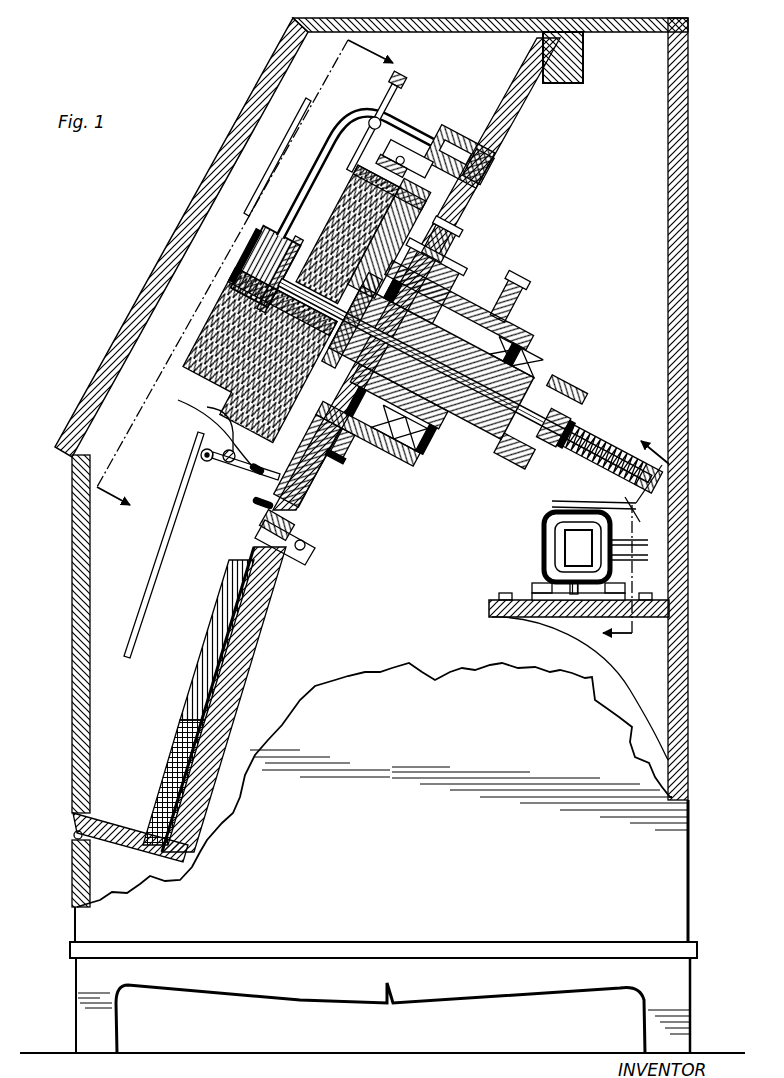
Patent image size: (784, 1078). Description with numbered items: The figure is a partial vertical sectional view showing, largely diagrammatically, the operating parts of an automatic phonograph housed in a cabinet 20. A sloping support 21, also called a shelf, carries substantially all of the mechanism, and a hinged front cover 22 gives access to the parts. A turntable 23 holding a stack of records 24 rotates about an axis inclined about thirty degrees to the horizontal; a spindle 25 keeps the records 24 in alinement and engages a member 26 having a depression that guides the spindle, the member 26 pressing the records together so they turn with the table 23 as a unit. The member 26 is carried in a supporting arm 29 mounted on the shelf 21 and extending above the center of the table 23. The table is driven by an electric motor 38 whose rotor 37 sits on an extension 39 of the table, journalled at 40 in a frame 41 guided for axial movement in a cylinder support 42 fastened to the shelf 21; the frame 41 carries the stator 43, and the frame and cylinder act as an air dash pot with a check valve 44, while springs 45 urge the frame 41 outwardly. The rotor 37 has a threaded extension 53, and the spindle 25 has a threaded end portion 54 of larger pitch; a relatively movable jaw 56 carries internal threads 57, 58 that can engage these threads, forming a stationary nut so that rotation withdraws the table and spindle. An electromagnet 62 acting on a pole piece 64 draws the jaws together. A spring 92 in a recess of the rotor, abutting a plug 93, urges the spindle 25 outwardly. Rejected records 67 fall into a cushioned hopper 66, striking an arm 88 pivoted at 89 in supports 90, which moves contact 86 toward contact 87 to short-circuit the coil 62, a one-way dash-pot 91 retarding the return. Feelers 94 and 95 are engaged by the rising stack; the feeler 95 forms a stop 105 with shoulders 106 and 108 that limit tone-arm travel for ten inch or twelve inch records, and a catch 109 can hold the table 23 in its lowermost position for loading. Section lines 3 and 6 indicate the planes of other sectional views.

The cabinet 20 is at (672, 480).
The sloping support 21 is at (522, 103).
The hinged front cover 22 is at (165, 276).
The turntable 23 is at (455, 220).
The stack of records 24 is at (253, 357).
The spindle 25 is at (562, 356).
The member 26 is at (275, 300).
The supporting arm 29 is at (304, 143).
The rotor 37 is at (355, 430).
The electric motor 38 is at (455, 270).
The extension of the table 39 is at (437, 255).
The journal 40 is at (320, 440).
The frame 41 is at (425, 455).
The cylinder support 42 is at (393, 455).
The stator 43 is at (513, 313).
The check valve 44 is at (510, 290).
The springs 45 is at (513, 335).
The threaded extension 53 is at (560, 390).
The threaded end portion 54 is at (648, 500).
The jaw 56 is at (585, 420).
The internal threads 57 is at (600, 425).
The internal threads 58 is at (600, 485).
The electromagnet 62 is at (545, 532).
The pole piece 64 is at (540, 555).
The cushioned hopper 66 is at (138, 675).
The records 67 is at (223, 673).
The contact 86 is at (250, 472).
The contact 87 is at (213, 420).
The arm 88 is at (207, 478).
The pivot 89 is at (203, 445).
The supports 90 is at (253, 505).
The one-way dash-pot 91 is at (203, 428).
The spring 92 is at (512, 455).
The plug 93 is at (595, 445).
The feeler 94 is at (345, 185).
The feeler 95 is at (435, 125).
The stop 105 is at (372, 108).
The shoulder 106 is at (395, 95).
The shoulder 108 is at (392, 115).
The catch 109 is at (447, 135).
The section line 3- 3 is at (252, 286).
The section line 6- 6 is at (632, 542).